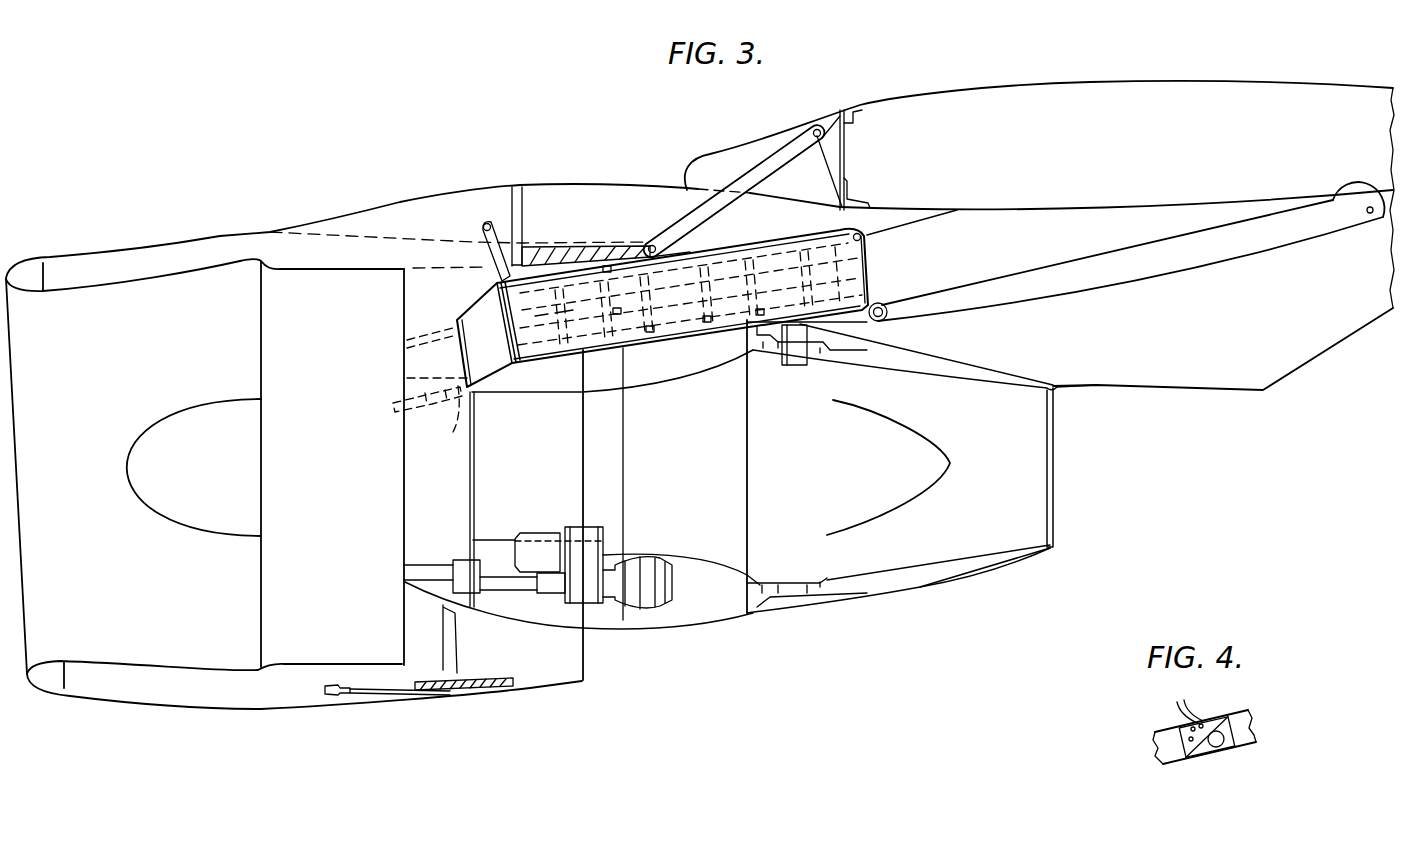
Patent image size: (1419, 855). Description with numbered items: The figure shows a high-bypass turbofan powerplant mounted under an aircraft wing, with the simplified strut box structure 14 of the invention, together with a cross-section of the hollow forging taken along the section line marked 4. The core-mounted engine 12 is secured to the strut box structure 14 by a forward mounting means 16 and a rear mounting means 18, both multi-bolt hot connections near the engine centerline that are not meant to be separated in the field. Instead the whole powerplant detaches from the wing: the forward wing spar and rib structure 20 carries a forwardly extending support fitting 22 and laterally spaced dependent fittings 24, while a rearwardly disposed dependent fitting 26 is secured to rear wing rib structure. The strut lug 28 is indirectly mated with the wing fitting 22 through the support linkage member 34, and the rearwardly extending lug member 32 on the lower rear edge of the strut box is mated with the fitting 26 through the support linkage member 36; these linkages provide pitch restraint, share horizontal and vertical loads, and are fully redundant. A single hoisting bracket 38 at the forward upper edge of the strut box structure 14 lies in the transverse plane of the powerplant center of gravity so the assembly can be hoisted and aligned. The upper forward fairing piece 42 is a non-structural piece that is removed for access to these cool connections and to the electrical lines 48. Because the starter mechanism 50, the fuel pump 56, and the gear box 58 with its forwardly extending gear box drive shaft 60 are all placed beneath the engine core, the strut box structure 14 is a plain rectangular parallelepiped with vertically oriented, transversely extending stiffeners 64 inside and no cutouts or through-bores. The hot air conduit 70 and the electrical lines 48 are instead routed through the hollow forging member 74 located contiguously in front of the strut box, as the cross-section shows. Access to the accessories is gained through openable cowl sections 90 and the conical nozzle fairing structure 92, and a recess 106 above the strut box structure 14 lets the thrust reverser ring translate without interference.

In FIG. 3, the core-mounted engine 12 is at (790, 467).
In FIG. 3, the strut box structure 14 is at (707, 297).
In FIG. 3, the forward mounting means 16 is at (430, 389).
In FIG. 3, the rear mounting means 18 is at (800, 363).
In FIG. 3, the forward wing spar and rib structure 20 is at (848, 159).
In FIG. 3, the forwardly extending support fitting 22 is at (850, 138).
In FIG. 3, the dependent fitting 24 is at (877, 213).
In FIG. 3, the rearwardly disposed dependent fitting 26 is at (1378, 215).
In FIG. 3, the strut lug 28 is at (697, 243).
In FIG. 3, the rearwardly extending lug member 32 is at (880, 294).
In FIG. 3, the support linkage member 34 is at (743, 172).
In FIG. 3, the support linkage member 36 is at (1135, 270).
In FIG. 3, the hoisting hard point bracket 38 is at (488, 275).
In FIG. 3, the upper forward fairing piece 42 is at (634, 215).
In FIG. 4, the electrical lines 48 is at (1175, 718).
In FIG. 3, the starter mechanism 50 is at (640, 602).
In FIG. 3, the fuel pump 56 is at (543, 535).
In FIG. 3, the gear box 58 is at (592, 527).
In FIG. 3, the gear box drive shaft 60 is at (503, 590).
In FIG. 3, the stiffeners 64 is at (647, 307).
In FIG. 4, the hot air conduit 70 is at (1215, 746).
In FIG. 3, the hollow forging member 74 is at (497, 358).
In FIG. 4, the hollow forging member 74 is at (1178, 758).
In FIG. 3, the openable cowl sections 90 is at (727, 615).
In FIG. 3, the conical nozzle fairing structure 92 is at (950, 567).
In FIG. 3, the recess 106 is at (597, 247).
In FIG. 3, the section line 4 is at (446, 340).